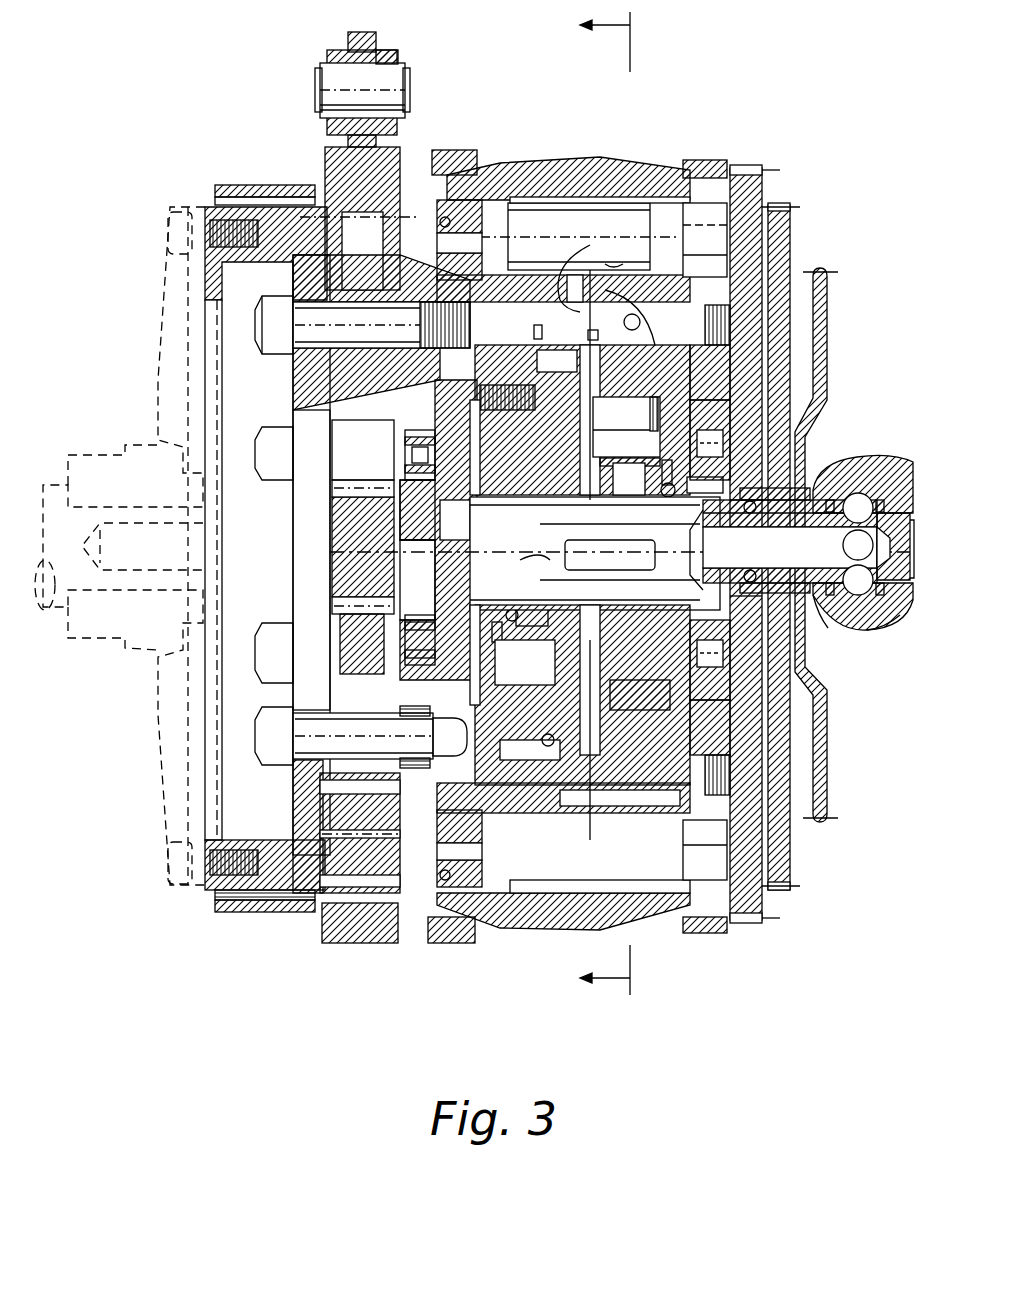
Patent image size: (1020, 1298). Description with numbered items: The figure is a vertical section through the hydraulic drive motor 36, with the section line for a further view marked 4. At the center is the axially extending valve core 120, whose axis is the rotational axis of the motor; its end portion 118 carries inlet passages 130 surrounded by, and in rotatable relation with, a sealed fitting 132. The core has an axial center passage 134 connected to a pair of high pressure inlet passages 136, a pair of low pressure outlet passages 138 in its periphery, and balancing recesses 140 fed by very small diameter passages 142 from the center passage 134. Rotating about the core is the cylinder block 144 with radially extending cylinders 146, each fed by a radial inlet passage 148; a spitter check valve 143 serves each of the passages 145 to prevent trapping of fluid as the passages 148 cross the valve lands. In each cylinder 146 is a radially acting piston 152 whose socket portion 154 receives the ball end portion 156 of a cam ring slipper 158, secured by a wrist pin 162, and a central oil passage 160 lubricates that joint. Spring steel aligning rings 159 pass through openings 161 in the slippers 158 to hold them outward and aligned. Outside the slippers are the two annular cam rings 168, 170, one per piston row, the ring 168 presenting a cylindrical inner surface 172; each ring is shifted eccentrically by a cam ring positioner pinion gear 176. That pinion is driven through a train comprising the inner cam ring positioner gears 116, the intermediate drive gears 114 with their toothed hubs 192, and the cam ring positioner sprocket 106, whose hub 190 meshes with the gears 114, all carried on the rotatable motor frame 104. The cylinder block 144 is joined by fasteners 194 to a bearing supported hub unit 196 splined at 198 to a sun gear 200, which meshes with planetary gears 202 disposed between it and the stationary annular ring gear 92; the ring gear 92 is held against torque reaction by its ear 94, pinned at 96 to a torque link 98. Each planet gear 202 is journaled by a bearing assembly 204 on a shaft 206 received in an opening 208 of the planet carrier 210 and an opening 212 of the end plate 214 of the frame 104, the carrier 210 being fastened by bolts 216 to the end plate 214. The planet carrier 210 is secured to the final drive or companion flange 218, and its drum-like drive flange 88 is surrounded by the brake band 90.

The hydraulic (fluid) motor 36 is at (390, 974).
The section line 4- 4 is at (605, 503).
The drum-like drive flange 88 is at (225, 205).
The brake band 90 is at (253, 183).
The annular ring gear 92 is at (324, 916).
The flange or ear 94 is at (356, 34).
The pin 96 is at (344, 50).
The torque link 98 is at (390, 48).
The rotatable hydraulic motor frame 104 is at (454, 149).
The cam ring positioner sprocket 106 is at (830, 360).
The laterally intermediate cam ring positioner drive gears 114 is at (792, 204).
The laterally inner cam ring positioner gears 116 is at (758, 166).
The end portion of valve core 118 is at (925, 530).
The central valve core 120 is at (815, 630).
The inlet passages 130 is at (865, 456).
The sealed fitting 132 is at (916, 618).
The center passage 134 is at (778, 550).
The high pressure fluid inlet passages 136 is at (556, 548).
The low pressure fluid outlet passages 138 is at (640, 530).
The balancing recesses 140 is at (686, 535).
The small diameter passages 142 is at (591, 543).
The spitter check valve 143 is at (676, 486).
The cylinder block 144 is at (660, 672).
The passages 145 is at (658, 460).
The radially extending cylinders 146 is at (612, 447).
The fluid inlet passage 148 is at (643, 483).
The piston 152 is at (635, 424).
The socket portion 154 is at (775, 358).
The ball end portion 156 is at (593, 376).
The cam ring shoe or slipper 158 is at (581, 265).
The spring steel aligning ring 159 is at (539, 322).
The central oil passage 160 is at (600, 692).
The openings 161 is at (626, 286).
The wrist pin 162 is at (605, 341).
The cam ring 168 is at (624, 262).
The second or left hand cam ring 170 is at (525, 281).
The cylindrical inner surface 172 is at (661, 784).
The cam ring positioner pinion gear 176 is at (602, 203).
The hub 190 is at (792, 523).
The hubs 192 is at (748, 400).
The fasteners 194 is at (495, 432).
The bearing supported hub unit 196 is at (422, 472).
The spline 198 is at (456, 581).
The sun gear 200 is at (357, 541).
The planetary gears 202 is at (384, 839).
The bearing assembly 204 is at (282, 694).
The shaft 206 is at (344, 736).
The opening in planet carrier 208 is at (278, 736).
The planet carrier 210 is at (312, 366).
The opening in end plate 212 is at (454, 738).
The end plate 214 is at (418, 710).
The bolts 216 is at (366, 334).
The final drive or companion flange 218 is at (165, 353).